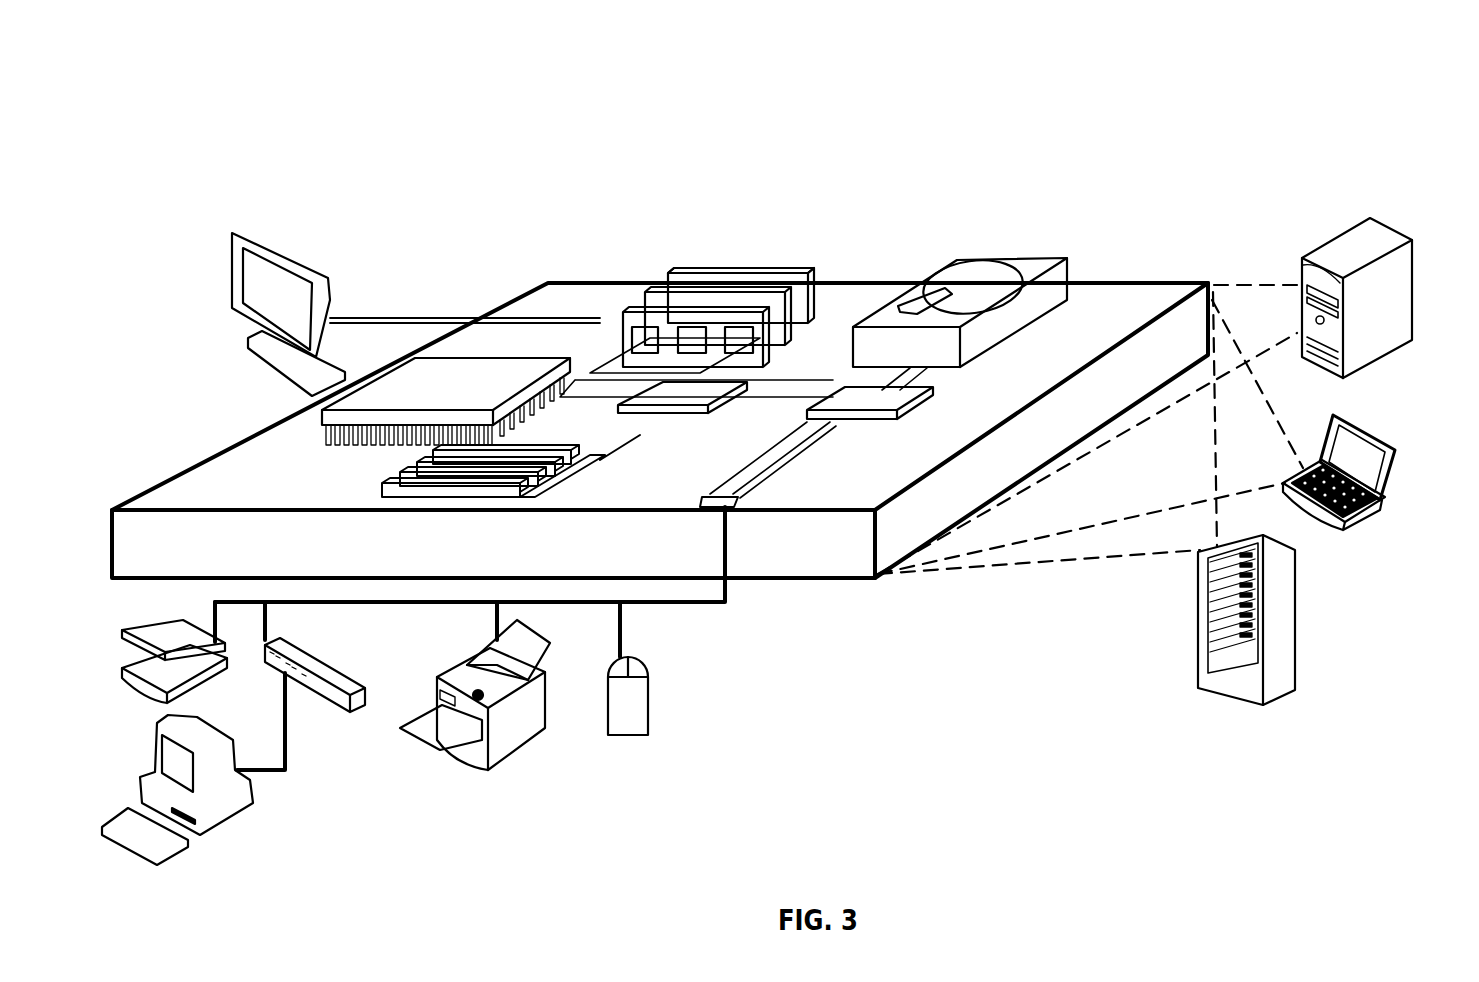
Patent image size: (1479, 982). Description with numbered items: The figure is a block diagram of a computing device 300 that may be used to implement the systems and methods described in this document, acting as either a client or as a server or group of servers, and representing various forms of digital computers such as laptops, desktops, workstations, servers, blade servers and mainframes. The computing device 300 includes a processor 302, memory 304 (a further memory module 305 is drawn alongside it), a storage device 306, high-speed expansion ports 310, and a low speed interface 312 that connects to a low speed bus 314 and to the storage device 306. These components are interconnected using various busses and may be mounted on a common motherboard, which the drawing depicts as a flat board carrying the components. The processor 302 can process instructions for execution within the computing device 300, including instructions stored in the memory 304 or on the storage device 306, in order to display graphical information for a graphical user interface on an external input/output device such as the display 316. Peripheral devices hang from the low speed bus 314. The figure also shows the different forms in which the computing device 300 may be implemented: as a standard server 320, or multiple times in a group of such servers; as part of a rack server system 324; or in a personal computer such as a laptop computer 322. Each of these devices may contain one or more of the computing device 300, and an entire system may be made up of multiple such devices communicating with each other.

The computing device 300 is at (1398, 88).
The processor 302 is at (317, 427).
The memory 304 is at (703, 273).
The memory module 305 is at (668, 277).
The storage device 306 is at (957, 260).
The high-speed expansion ports 310 is at (420, 465).
The low speed interface 312 is at (857, 403).
The low speed bus 314 is at (728, 503).
The display 316 is at (240, 232).
The standard server 320 is at (1317, 247).
The laptop computer 322 is at (1350, 522).
The rack server system 324 is at (1200, 656).